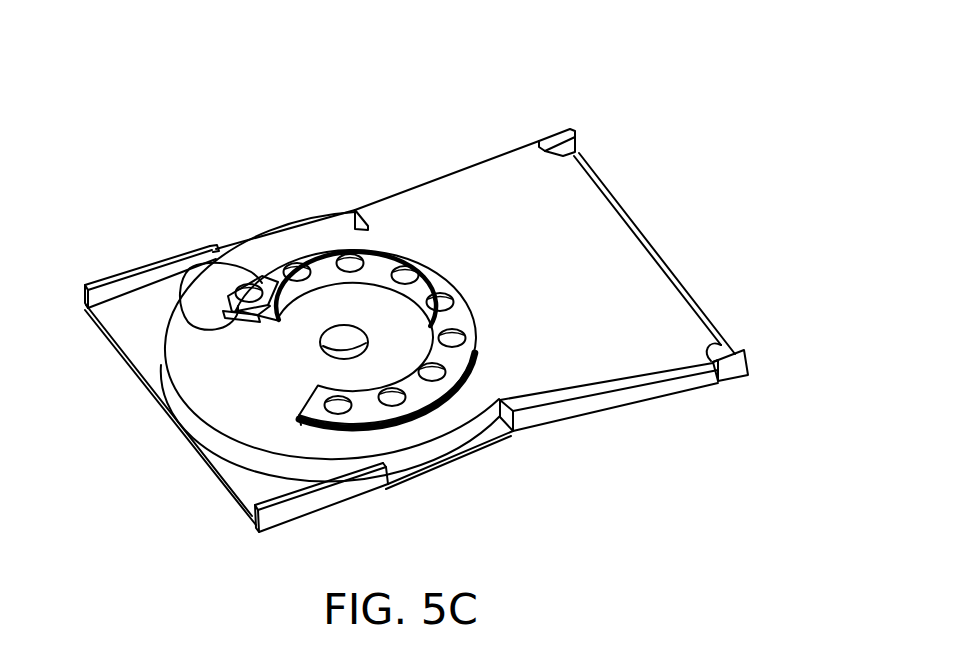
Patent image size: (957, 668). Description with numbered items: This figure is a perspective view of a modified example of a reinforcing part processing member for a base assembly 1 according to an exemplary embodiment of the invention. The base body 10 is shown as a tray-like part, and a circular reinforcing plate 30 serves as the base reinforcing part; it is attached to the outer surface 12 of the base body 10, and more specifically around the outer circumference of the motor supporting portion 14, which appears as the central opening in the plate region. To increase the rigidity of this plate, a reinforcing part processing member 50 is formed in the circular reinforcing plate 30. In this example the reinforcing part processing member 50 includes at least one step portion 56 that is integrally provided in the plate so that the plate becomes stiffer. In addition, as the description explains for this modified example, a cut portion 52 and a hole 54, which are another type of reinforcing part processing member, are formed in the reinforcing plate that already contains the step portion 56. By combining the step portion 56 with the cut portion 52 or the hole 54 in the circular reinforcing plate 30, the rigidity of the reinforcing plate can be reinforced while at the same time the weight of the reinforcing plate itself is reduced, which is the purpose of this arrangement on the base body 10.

The disc assembly 1 is at (437, 112).
The base body 10 is at (535, 418).
The outer surface 12 is at (612, 263).
The motor supporting portion 14 is at (328, 345).
The circular reinforcing plate 30 is at (330, 265).
The reinforcing part processing member 50 is at (202, 173).
The cut portion 52 is at (260, 293).
The hole 54 is at (192, 264).
The step portion 56 is at (262, 283).